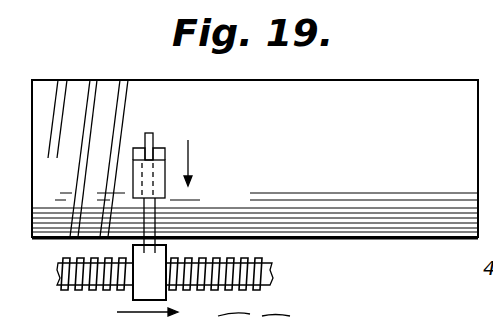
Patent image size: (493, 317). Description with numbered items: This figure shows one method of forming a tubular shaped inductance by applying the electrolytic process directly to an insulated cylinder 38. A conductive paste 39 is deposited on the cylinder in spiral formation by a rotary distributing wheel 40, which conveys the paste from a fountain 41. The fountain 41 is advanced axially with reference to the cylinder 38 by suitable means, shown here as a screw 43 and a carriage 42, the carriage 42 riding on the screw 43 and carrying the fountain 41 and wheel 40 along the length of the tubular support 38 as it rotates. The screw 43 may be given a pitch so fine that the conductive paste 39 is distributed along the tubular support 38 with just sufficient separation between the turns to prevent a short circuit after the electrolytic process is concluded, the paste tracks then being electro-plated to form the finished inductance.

The insulated cylinder 38 is at (255, 159).
The conductive paste 39 is at (97, 87).
The rotary distributing wheel 40 is at (155, 138).
The fountain 41 is at (165, 188).
The carriage 42 is at (150, 265).
The screw 43 is at (62, 268).